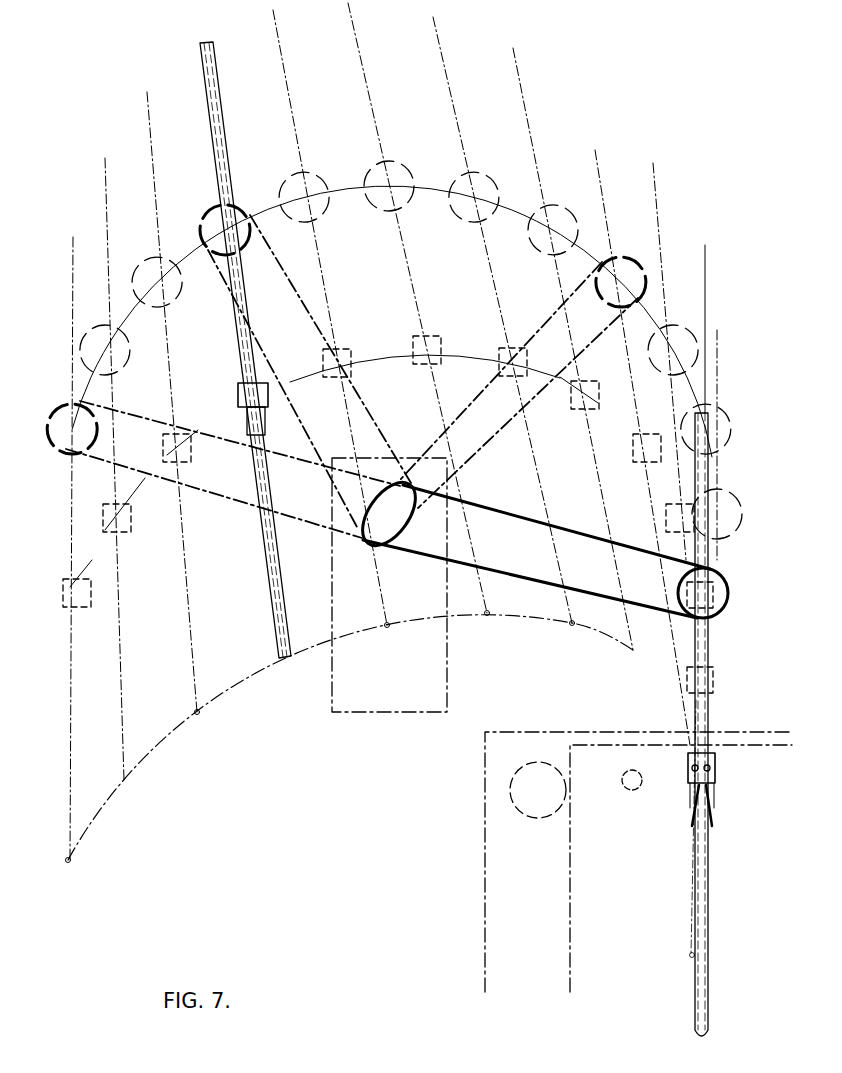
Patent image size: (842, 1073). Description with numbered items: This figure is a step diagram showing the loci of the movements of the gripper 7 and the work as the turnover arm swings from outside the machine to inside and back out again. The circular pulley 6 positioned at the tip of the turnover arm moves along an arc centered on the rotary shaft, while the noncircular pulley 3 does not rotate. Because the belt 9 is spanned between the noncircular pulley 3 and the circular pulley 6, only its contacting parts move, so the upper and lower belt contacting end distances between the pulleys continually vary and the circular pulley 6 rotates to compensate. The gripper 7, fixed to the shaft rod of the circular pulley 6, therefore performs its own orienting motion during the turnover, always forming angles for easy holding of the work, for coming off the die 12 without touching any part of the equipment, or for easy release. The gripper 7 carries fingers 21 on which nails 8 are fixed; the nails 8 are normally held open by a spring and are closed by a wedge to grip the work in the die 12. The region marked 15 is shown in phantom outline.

The noncircular pulley 3 is at (377, 533).
The circular pulley 6 is at (67, 403).
The gripper 7 is at (237, 385).
The nails 8 is at (713, 815).
The belt 9 is at (236, 503).
The die 12 is at (575, 855).
The station box 15 is at (449, 690).
The fingers 21 is at (690, 790).